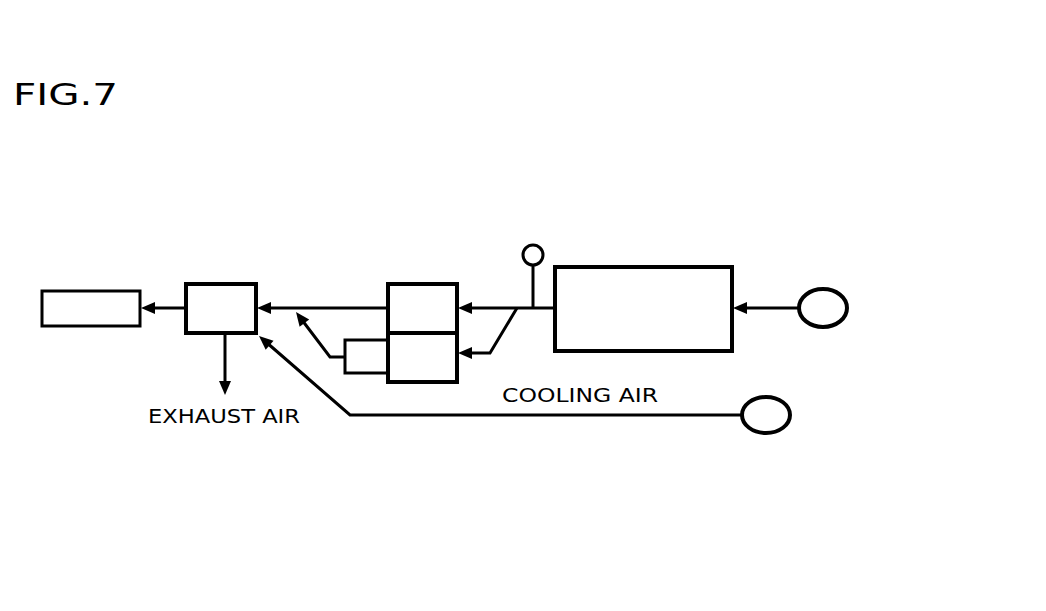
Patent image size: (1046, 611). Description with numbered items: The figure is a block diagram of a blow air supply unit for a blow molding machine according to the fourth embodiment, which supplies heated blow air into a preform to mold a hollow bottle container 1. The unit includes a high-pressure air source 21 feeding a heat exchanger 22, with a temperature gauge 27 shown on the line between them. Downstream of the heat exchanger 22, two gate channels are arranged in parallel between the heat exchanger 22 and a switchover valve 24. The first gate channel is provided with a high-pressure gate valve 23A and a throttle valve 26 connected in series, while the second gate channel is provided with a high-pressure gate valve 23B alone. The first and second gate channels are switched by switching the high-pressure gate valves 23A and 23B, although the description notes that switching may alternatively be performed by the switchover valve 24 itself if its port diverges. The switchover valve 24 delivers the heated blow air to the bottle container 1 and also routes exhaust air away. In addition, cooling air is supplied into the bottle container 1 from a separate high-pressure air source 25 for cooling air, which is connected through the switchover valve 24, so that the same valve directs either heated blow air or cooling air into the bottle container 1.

The hollow bottle container 1 is at (92, 327).
The high-pressure air source 21 is at (822, 289).
The heat exchanger 22 is at (648, 267).
The high-pressure gate valve 23A is at (428, 382).
The high-pressure gate valve 23B is at (423, 284).
The switchover valve 24 is at (221, 284).
The high-pressure air source for cooling air 25 is at (768, 433).
The throttle valve 26 is at (360, 373).
The temperature gauge 27 is at (535, 245).